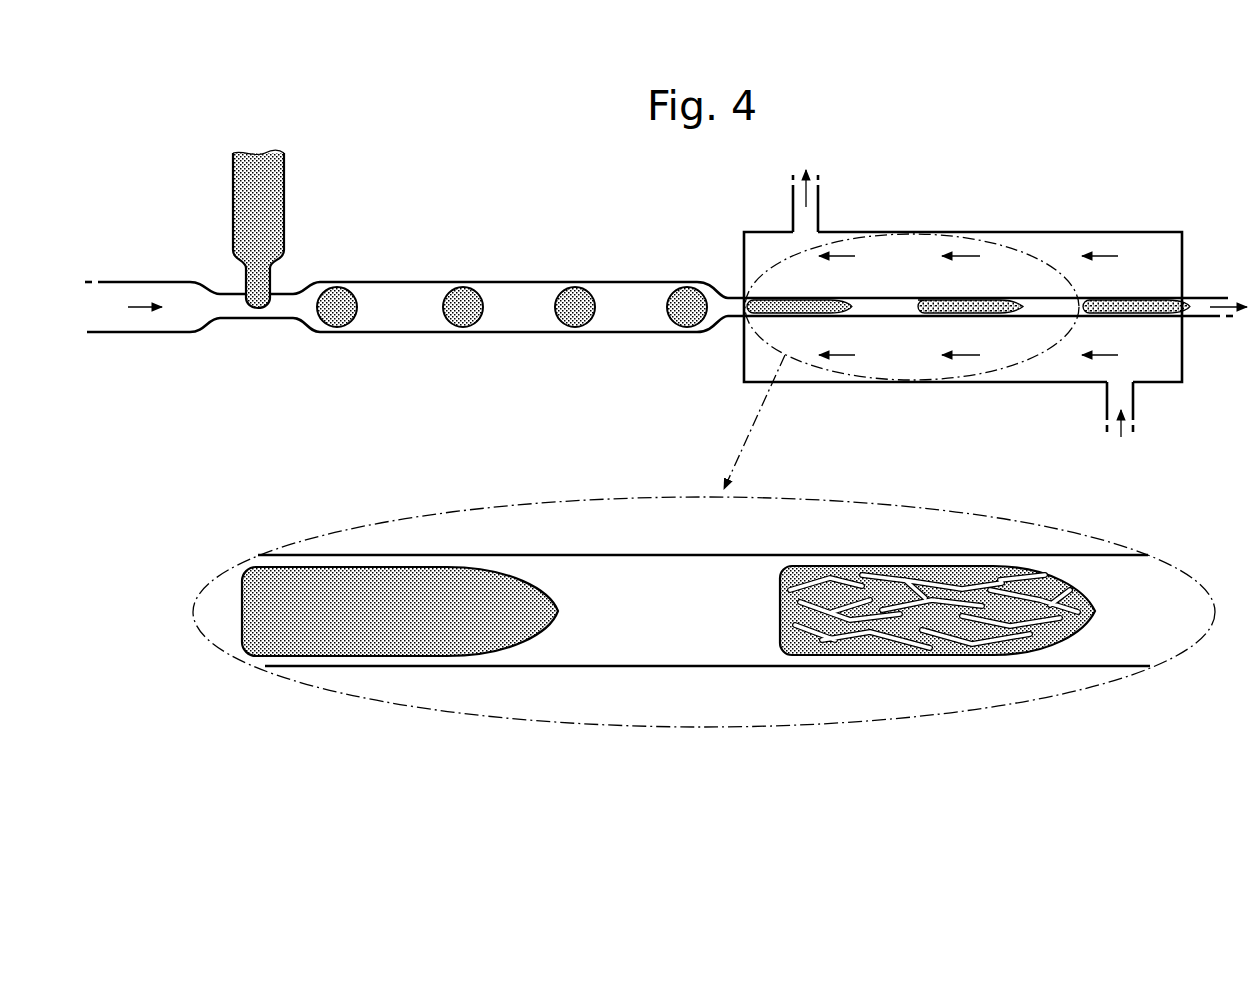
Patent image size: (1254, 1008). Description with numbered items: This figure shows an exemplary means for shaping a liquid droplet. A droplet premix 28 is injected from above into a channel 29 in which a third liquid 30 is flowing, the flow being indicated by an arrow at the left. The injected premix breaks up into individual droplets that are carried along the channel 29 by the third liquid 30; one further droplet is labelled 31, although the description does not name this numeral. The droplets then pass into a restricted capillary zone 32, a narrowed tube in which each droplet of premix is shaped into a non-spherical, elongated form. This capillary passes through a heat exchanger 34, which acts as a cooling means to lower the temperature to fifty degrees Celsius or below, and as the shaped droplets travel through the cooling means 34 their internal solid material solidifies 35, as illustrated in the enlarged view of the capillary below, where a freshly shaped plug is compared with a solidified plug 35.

The droplet premix 28 is at (263, 203).
The channel 29 is at (338, 322).
The third liquid 30 is at (138, 320).
The droplets 31 is at (463, 317).
The restricted capillary zone 32 is at (762, 317).
The heat exchanger (cooling means) 34 is at (1157, 255).
The solidified internal solid material 35 is at (905, 647).